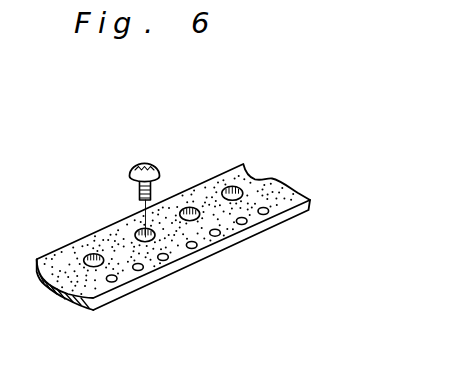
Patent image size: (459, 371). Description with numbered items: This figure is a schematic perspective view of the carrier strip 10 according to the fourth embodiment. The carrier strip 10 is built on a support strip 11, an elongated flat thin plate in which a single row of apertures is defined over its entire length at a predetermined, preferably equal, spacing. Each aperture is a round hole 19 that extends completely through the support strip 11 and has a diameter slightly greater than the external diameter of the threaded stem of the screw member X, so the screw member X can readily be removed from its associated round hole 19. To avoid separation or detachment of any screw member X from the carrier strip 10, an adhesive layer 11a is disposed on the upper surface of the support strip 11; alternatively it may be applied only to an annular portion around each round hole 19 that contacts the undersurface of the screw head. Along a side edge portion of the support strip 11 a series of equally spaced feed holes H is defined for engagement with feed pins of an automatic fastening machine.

The carrier strip 10 is at (191, 228).
The support strip 11 is at (258, 189).
The adhesive layer 11a is at (277, 199).
The round hole 19 is at (137, 231).
The feed hole H is at (215, 236).
The screw member X is at (141, 163).